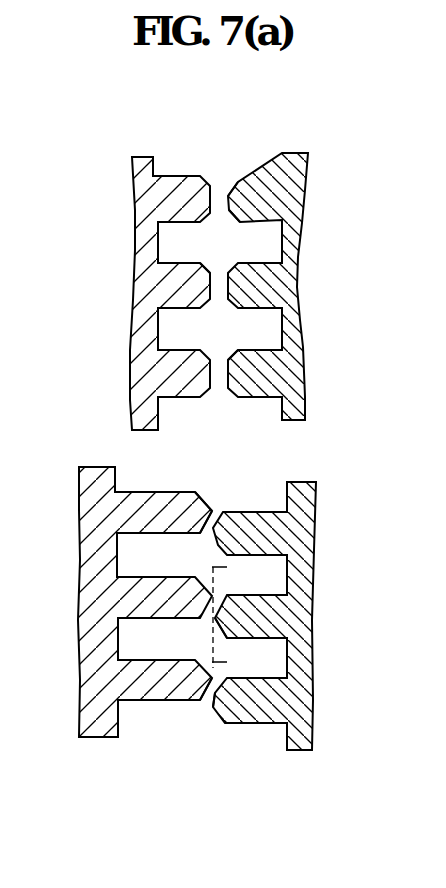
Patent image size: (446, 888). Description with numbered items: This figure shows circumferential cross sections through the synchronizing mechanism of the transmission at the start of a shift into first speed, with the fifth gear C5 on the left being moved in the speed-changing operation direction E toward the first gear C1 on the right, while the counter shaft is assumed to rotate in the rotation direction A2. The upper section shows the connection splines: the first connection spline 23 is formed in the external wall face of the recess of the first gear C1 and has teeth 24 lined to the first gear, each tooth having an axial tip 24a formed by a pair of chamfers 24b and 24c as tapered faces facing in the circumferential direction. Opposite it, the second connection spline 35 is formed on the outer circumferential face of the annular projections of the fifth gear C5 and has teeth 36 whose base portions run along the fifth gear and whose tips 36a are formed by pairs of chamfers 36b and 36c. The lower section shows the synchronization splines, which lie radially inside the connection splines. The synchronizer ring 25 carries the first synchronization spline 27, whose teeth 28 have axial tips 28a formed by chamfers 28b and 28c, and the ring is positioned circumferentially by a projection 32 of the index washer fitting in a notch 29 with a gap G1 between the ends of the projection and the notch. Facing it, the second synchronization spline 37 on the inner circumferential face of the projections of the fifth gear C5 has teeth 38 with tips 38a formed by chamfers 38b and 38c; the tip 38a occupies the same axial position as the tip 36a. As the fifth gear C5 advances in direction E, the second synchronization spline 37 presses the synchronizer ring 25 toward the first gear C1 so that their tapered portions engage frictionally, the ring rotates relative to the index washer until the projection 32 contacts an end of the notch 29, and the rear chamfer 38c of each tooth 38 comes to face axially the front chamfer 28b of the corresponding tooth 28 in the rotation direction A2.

The speed-changing operation direction E is at (160, 151).
The fifth gear C5 is at (112, 447).
The first gear C1 is at (296, 286).
The teeth 36 is at (150, 370).
The tip 36a is at (198, 388).
The chamfer 36b is at (208, 278).
The chamfer 36c is at (188, 329).
The second connection spline 35 is at (178, 405).
The teeth 24 is at (290, 290).
The tip 24a is at (230, 363).
The chamfer 24b is at (232, 183).
The chamfer 24c is at (230, 215).
The first connection spline 23 is at (248, 400).
The rotation direction A2 is at (358, 462).
The teeth 38 is at (150, 500).
The tip 38a is at (215, 511).
The chamfer 38b is at (210, 492).
The chamfer 38c is at (212, 522).
The second synchronization spline 37 is at (182, 712).
The notch 29 is at (112, 602).
The teeth 28 is at (258, 708).
The tip 28a is at (210, 708).
The chamfer 28b is at (203, 673).
The chamfer 28c is at (212, 633).
The first synchronization spline 27 is at (260, 728).
The synchronizer ring 25 is at (298, 616).
The projection 32 is at (297, 616).
The gap G1 is at (226, 583).